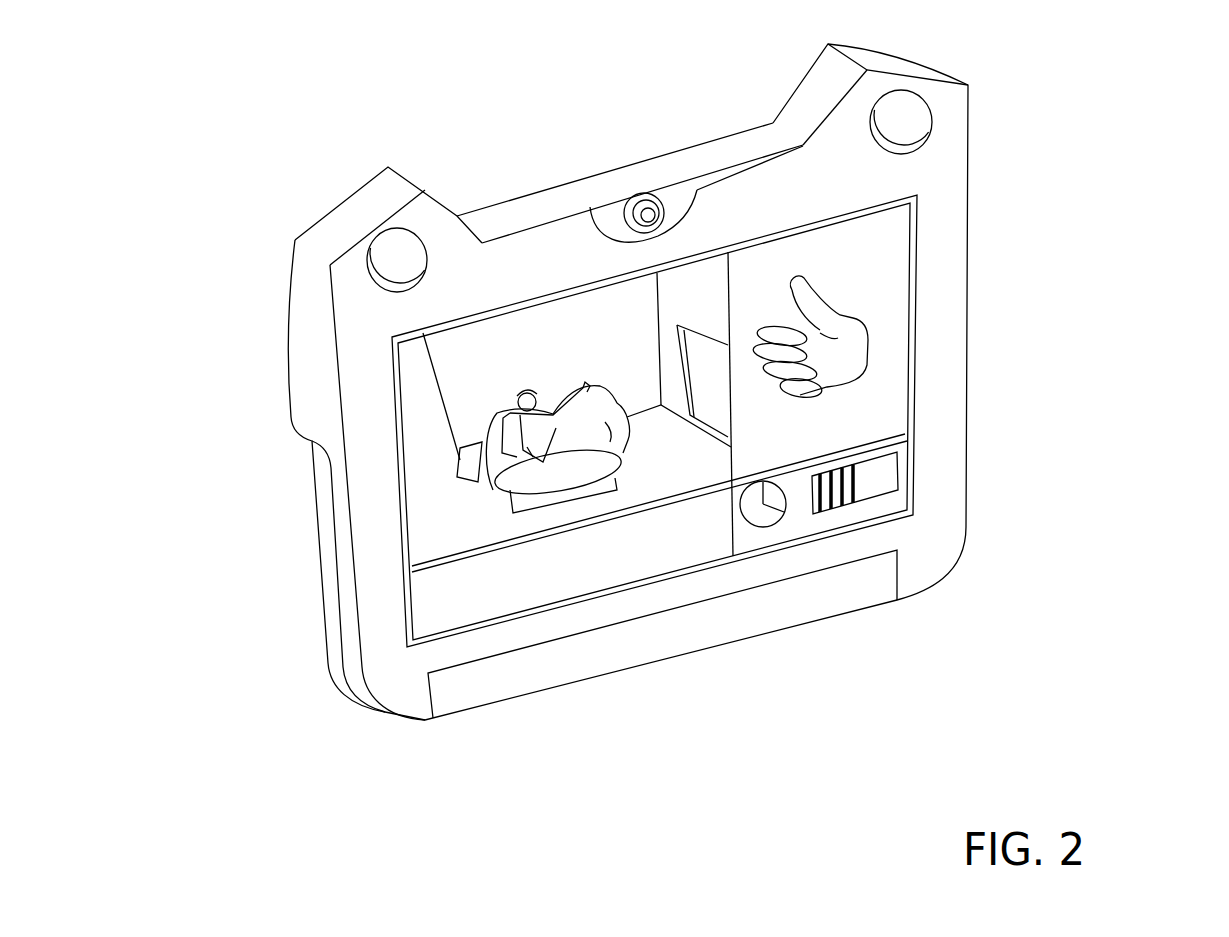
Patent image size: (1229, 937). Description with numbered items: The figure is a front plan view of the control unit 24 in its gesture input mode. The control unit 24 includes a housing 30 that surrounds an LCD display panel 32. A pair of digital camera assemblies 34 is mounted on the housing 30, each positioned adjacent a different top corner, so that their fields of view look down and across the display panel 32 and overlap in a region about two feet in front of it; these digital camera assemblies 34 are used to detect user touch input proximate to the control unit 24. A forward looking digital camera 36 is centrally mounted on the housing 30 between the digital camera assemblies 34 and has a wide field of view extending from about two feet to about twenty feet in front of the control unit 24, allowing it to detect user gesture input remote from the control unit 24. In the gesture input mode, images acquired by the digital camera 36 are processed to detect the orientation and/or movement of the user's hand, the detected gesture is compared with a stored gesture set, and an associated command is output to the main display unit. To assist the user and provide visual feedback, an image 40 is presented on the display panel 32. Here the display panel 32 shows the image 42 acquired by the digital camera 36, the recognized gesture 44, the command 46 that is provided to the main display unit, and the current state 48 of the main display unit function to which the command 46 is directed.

The control unit 24 is at (1062, 102).
The housing 30 is at (618, 167).
The LCD display panel 32 is at (873, 410).
The digital camera assemblies 34 is at (400, 247).
The forward looking digital camera 36 is at (650, 215).
The image 40 is at (435, 523).
The image acquired by the digital camera 42 is at (493, 382).
The recognized gesture 44 is at (862, 288).
The command 46 is at (657, 558).
The current state 48 is at (795, 518).